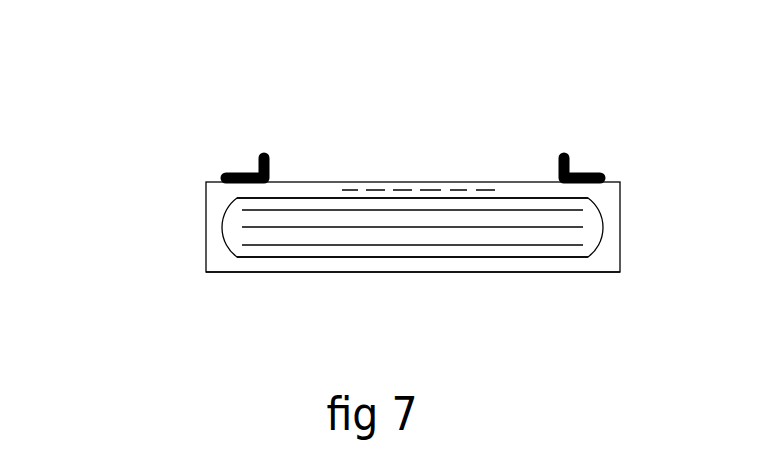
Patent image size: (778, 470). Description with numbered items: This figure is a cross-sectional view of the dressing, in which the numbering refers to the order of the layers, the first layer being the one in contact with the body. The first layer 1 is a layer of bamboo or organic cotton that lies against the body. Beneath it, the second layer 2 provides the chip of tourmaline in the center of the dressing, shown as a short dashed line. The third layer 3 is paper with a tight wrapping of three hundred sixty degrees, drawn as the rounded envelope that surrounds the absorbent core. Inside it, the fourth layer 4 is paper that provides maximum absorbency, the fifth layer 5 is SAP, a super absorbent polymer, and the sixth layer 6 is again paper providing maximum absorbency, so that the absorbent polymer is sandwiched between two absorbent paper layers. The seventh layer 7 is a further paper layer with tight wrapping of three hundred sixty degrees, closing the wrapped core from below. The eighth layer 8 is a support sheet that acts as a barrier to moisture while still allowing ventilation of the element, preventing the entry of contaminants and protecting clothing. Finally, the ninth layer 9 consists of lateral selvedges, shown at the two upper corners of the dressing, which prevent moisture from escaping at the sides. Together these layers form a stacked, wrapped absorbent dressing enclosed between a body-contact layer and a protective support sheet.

The first layer 1 is at (498, 182).
The second layer 2 is at (377, 188).
The third layer 3 is at (588, 197).
The fourth layer 4 is at (240, 210).
The fifth layer 5 is at (570, 227).
The sixth layer 6 is at (242, 245).
The seventh layer 7 is at (588, 257).
The eighth layer 8 is at (503, 272).
The ninth layer 9 is at (260, 163).